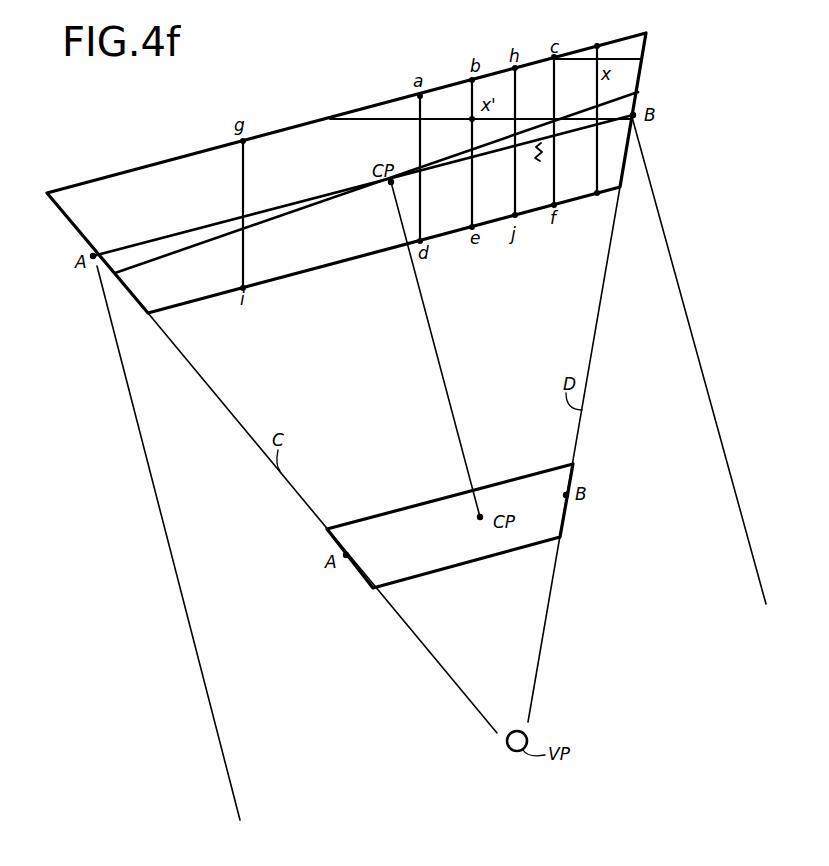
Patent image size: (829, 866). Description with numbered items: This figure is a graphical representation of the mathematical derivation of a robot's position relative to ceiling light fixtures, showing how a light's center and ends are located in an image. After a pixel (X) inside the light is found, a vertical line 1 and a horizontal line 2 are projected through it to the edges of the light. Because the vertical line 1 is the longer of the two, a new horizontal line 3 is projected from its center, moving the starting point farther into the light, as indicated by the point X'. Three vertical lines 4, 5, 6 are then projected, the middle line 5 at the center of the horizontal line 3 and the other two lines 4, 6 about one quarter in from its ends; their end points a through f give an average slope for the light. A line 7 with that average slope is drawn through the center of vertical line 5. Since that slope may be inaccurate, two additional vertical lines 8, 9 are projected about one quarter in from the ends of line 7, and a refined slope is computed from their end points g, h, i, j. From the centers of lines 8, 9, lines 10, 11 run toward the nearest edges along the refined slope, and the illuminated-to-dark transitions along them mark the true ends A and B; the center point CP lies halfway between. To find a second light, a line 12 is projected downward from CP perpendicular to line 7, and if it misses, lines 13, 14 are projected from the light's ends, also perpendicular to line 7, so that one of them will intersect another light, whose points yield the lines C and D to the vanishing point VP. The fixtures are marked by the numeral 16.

The vertical line 1 is at (597, 182).
The horizontal line 2 is at (605, 52).
The new horizontal line 3 is at (397, 119).
The vertical line 4 is at (420, 220).
The vertical line 5 is at (472, 205).
The vertical line 6 is at (554, 185).
The line 7 is at (327, 205).
The additional vertical line 8 is at (515, 115).
The additional vertical line 9 is at (243, 205).
The line 10 is at (530, 164).
The line 11 is at (363, 185).
The line 12 is at (437, 349).
The line 13 is at (705, 383).
The line 14 is at (174, 566).
The fixture 16 is at (77, 184).